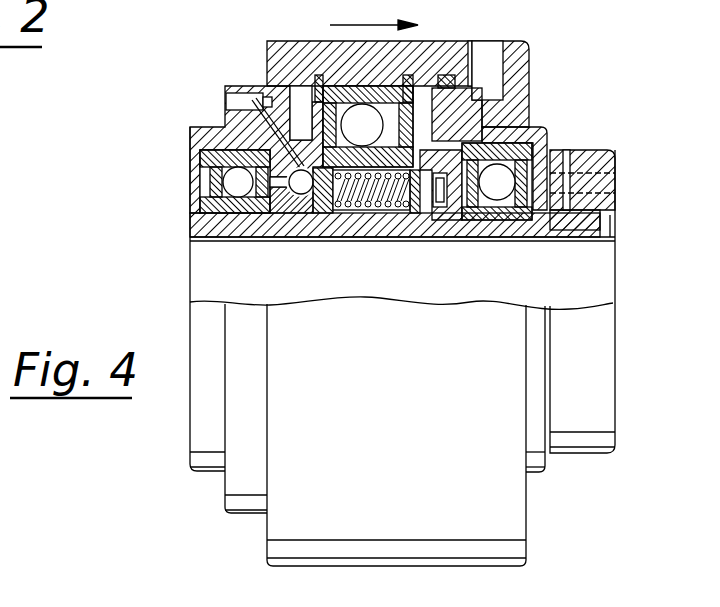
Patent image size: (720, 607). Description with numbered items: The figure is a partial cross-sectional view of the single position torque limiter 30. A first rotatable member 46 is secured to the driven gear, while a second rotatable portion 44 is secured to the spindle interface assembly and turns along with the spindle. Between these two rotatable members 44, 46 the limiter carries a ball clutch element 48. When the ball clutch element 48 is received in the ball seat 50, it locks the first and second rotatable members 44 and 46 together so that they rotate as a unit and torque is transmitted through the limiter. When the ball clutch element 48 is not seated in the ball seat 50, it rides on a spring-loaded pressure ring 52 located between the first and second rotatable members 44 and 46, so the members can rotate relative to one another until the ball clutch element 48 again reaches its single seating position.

The single position torque limiter 30 is at (213, 273).
The second rotatable portion 44 is at (205, 226).
The first rotatable member 46 is at (212, 126).
The ball clutch element 48 is at (226, 88).
The ball seat 50 is at (294, 194).
The spring-loaded pressure ring 52 is at (327, 212).